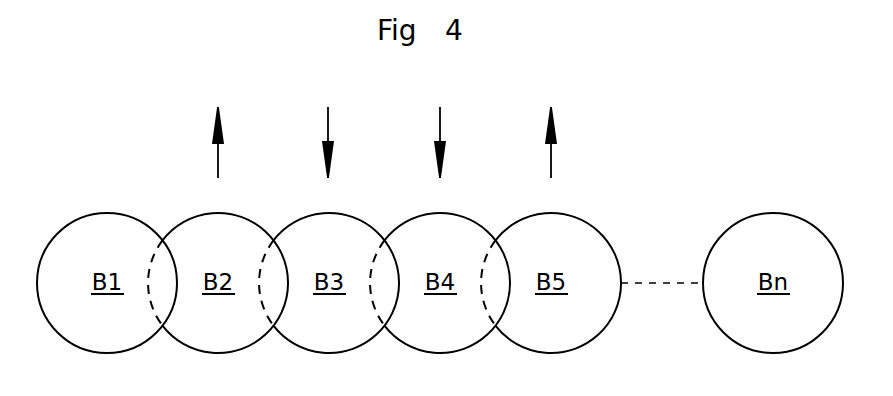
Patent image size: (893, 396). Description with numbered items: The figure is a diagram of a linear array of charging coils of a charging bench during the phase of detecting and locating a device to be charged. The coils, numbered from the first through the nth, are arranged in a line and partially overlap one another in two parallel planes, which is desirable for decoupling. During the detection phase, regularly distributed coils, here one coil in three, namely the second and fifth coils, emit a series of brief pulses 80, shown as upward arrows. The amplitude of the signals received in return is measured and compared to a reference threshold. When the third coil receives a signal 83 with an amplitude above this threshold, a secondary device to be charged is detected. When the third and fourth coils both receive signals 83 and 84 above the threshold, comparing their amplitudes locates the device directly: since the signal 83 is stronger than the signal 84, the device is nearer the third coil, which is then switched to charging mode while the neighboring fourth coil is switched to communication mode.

The brief pulses 80 is at (404, 142).
The signal 83 is at (348, 142).
The signal 84 is at (460, 142).